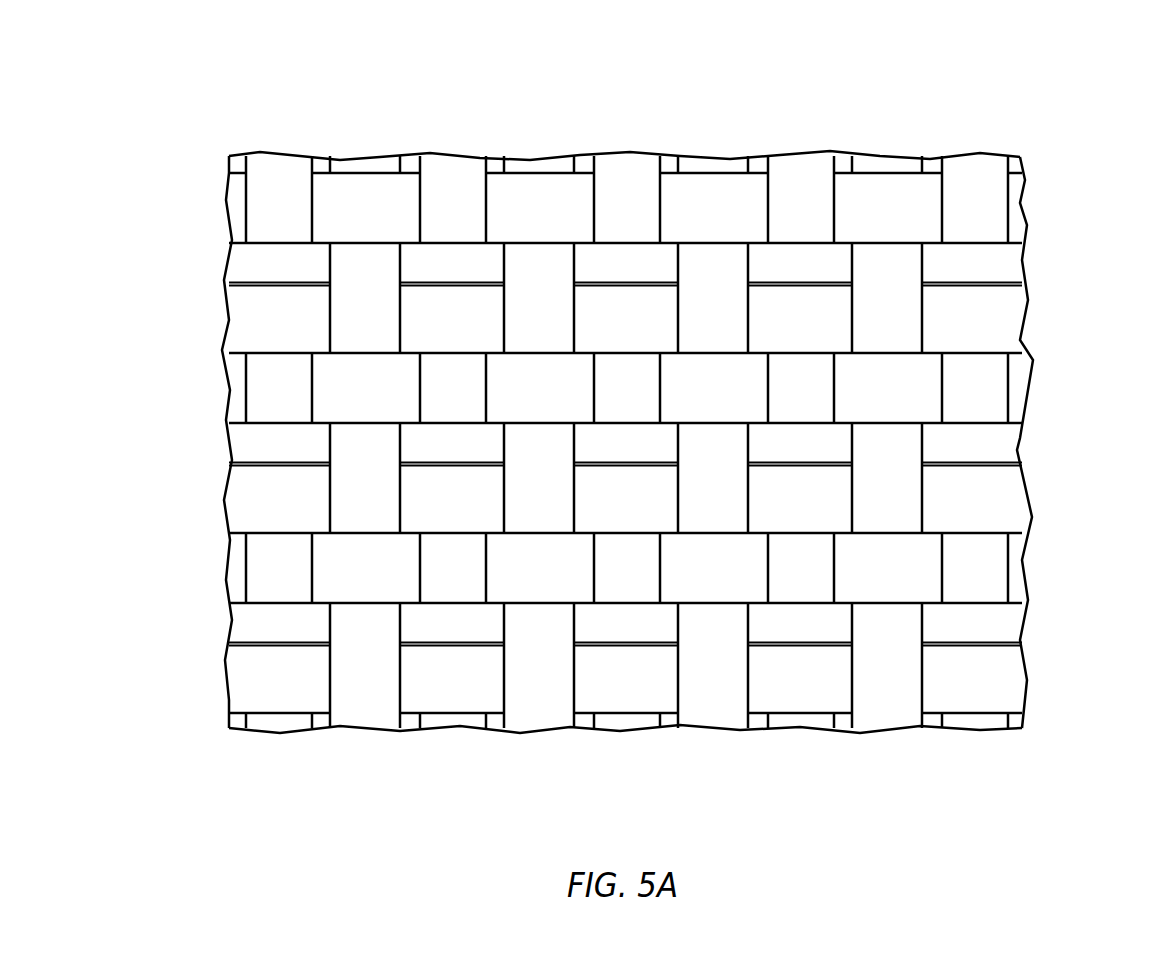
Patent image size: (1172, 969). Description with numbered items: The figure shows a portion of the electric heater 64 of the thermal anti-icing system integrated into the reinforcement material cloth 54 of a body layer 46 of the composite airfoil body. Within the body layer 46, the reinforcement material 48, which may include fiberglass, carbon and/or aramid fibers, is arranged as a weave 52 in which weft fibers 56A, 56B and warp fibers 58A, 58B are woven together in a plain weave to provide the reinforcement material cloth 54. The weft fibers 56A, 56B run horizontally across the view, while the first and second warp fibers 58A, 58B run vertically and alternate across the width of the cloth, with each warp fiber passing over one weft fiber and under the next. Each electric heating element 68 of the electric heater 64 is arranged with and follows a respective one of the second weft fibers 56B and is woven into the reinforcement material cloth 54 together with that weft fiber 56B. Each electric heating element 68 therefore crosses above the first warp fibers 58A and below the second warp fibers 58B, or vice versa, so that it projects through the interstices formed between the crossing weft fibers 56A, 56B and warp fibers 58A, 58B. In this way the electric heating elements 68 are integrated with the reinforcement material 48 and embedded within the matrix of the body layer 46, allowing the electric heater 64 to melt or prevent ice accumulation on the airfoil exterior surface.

The body layer 46 is at (1015, 110).
The reinforcement material 48 is at (620, 441).
The weave 52 is at (182, 131).
The reinforcement material cloth 54 is at (620, 485).
The first weft fiber 56A is at (1017, 215).
The second weft fiber 56B is at (1020, 325).
The first warp fiber 58A is at (368, 720).
The second warp fiber 58B is at (278, 725).
The electric heater 64 is at (188, 258).
The electric heating element 68 is at (1023, 263).